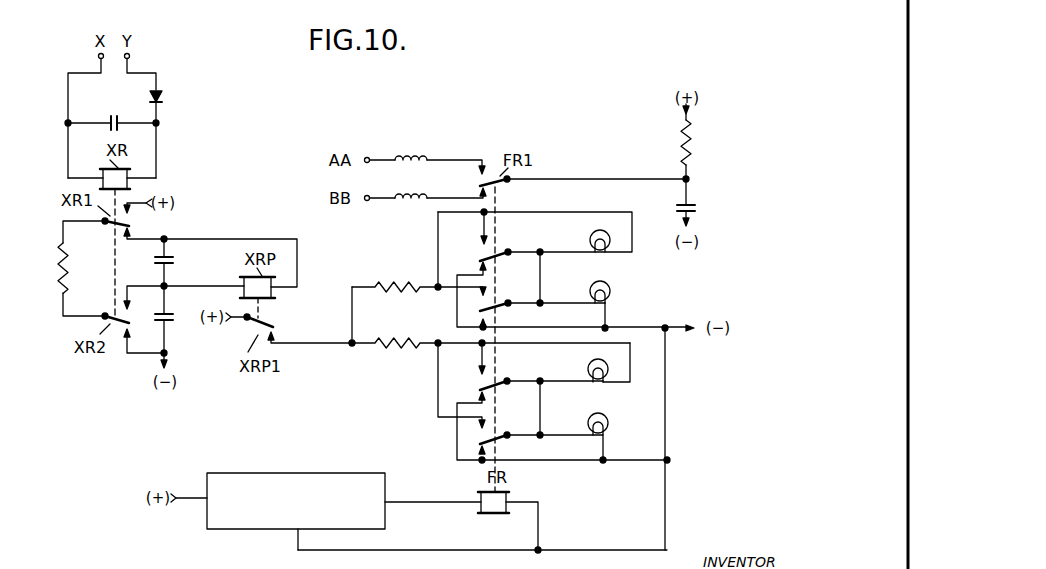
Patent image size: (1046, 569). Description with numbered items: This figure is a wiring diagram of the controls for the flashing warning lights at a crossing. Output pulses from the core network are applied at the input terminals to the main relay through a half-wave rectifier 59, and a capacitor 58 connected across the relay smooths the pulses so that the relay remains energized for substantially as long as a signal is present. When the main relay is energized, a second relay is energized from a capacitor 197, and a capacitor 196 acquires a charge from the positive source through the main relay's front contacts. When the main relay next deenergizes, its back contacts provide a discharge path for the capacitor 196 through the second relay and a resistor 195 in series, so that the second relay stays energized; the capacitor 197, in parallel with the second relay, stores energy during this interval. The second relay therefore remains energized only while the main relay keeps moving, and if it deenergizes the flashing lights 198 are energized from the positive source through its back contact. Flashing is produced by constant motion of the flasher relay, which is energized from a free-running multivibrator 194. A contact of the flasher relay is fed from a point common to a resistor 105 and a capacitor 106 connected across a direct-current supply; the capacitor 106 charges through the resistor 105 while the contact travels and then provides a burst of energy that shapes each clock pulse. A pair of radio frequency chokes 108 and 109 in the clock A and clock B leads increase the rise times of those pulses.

The capacitor 58 is at (110, 117).
The half-wave rectifier 59 is at (165, 98).
The resistor 105 is at (692, 146).
The capacitor 106 is at (697, 203).
The radio frequency choke 108 is at (415, 153).
The radio frequency choke 109 is at (397, 207).
The free-running multivibrator 194 is at (294, 473).
The resistor 195 is at (62, 270).
The capacitor 196 is at (171, 324).
The capacitor 197 is at (170, 259).
The flashing lights 198 is at (591, 238).